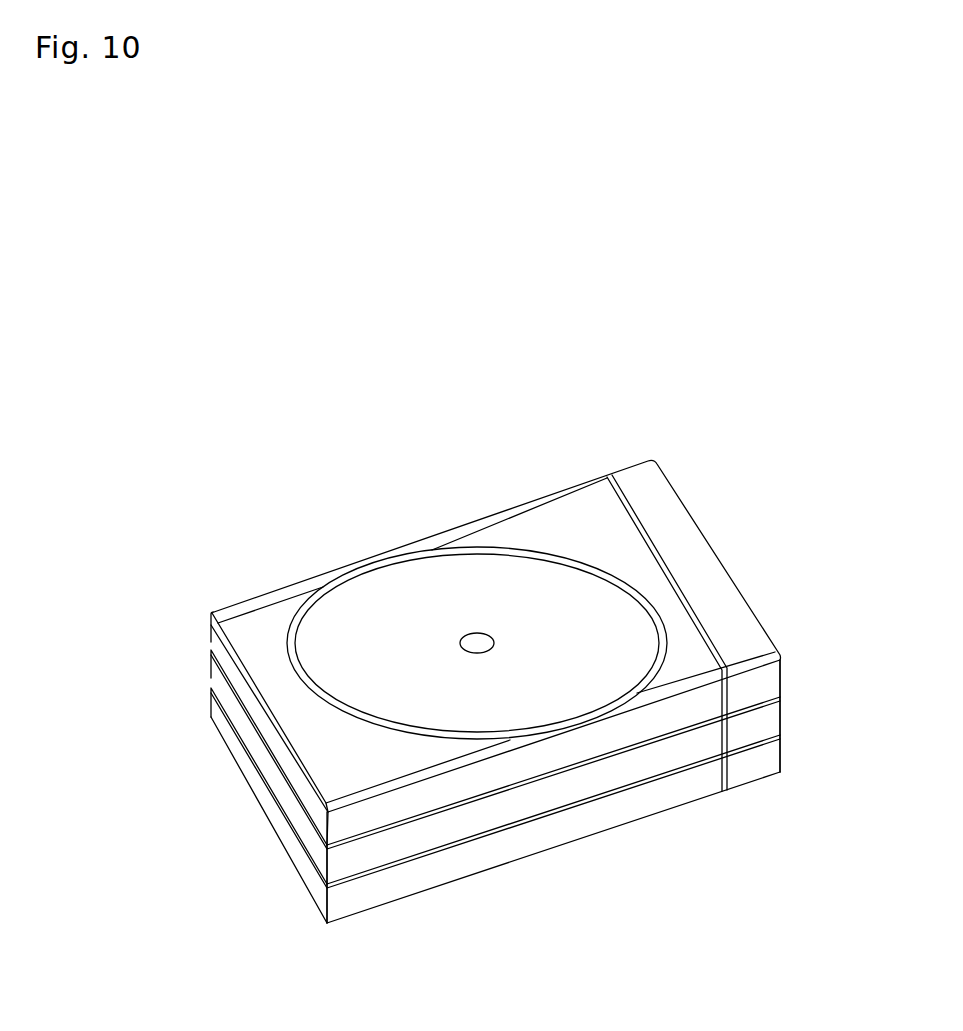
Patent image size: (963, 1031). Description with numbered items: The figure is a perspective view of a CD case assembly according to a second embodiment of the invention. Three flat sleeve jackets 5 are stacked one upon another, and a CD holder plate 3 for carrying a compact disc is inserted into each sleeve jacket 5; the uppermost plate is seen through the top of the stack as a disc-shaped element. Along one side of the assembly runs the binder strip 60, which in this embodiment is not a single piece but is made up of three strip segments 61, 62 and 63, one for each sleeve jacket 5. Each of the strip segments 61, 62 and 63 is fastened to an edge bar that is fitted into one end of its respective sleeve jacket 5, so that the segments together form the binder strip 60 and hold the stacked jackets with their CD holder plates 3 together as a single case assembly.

The CD holder plate 3 is at (683, 528).
The sleeve jacket 5 is at (278, 591).
The binder strip 60 is at (468, 689).
The strip segment 61 is at (212, 637).
The strip segment 62 is at (303, 826).
The strip segment 63 is at (318, 886).